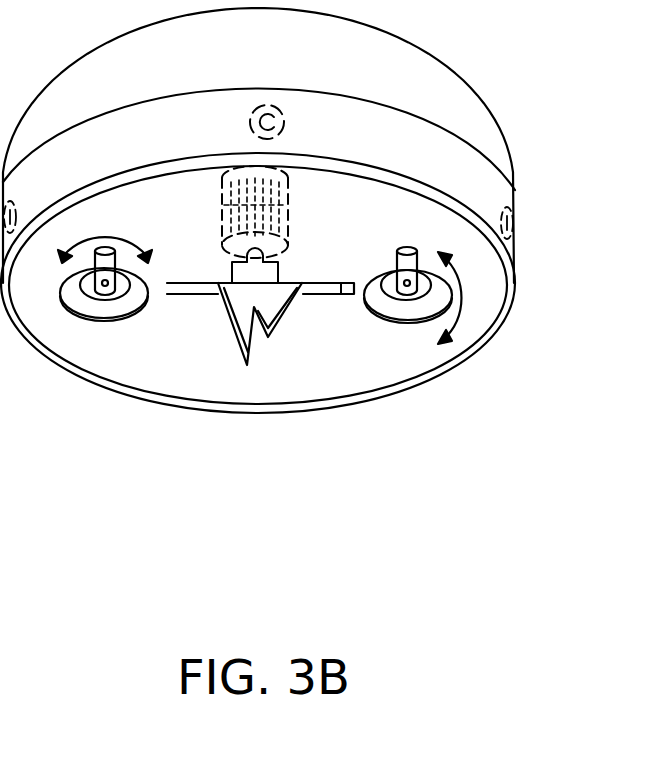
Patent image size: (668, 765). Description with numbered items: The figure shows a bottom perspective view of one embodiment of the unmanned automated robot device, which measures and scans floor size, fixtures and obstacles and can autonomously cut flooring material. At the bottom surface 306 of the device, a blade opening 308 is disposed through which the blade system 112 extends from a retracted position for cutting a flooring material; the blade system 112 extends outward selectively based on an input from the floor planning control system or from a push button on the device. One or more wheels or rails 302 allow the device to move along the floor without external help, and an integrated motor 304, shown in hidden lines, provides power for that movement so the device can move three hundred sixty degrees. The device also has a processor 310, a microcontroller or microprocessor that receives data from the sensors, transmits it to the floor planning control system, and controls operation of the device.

The blade system 112 is at (252, 328).
The wheels or rails 302 is at (100, 322).
The integrated motor 304 is at (288, 200).
The bottom surface 306 is at (307, 377).
The blade opening 308 is at (341, 294).
The processor 310 is at (257, 210).